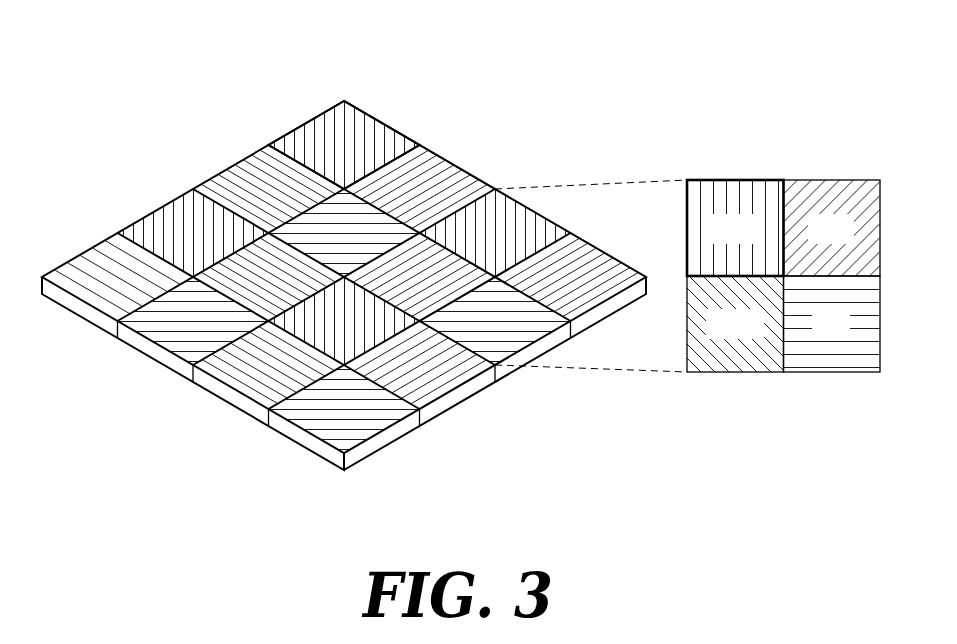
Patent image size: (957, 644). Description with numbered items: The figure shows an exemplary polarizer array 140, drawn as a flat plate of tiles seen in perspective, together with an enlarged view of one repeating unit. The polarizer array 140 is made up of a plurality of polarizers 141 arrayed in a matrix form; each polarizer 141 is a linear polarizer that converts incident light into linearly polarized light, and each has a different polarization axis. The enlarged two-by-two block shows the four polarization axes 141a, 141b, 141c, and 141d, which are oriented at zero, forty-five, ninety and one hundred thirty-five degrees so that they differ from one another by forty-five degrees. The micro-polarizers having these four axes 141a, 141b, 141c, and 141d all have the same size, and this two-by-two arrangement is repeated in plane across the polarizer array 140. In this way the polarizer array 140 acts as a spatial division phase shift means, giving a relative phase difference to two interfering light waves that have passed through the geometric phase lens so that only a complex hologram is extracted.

The polarizer array 140 is at (424, 100).
The polarizer 141 is at (296, 132).
The polarization axis of 0° 141a is at (830, 370).
The polarization axis of 45° 141b is at (830, 182).
The polarization axis of 90° 141c is at (717, 182).
The polarization axis of 135° 141d is at (718, 370).